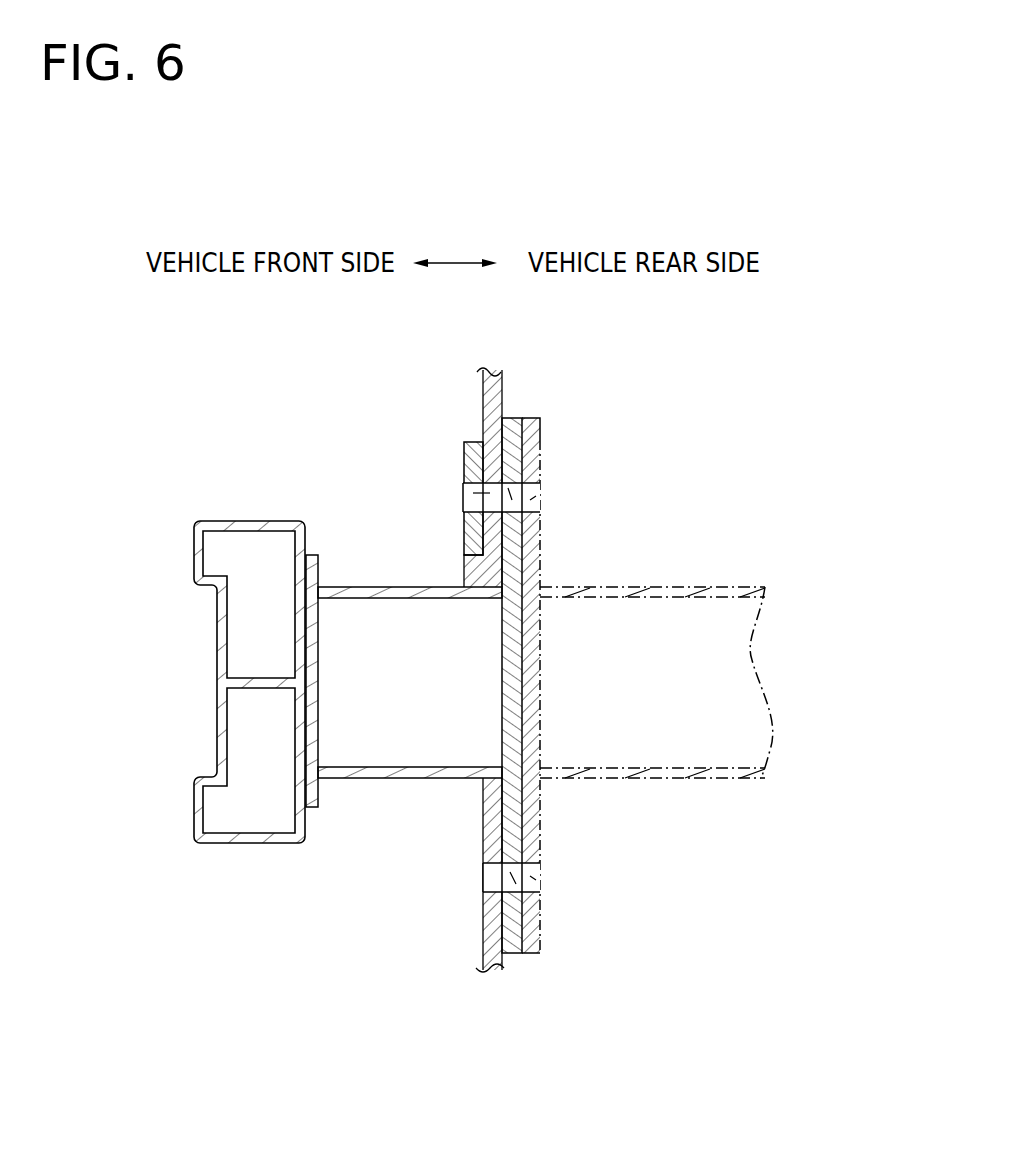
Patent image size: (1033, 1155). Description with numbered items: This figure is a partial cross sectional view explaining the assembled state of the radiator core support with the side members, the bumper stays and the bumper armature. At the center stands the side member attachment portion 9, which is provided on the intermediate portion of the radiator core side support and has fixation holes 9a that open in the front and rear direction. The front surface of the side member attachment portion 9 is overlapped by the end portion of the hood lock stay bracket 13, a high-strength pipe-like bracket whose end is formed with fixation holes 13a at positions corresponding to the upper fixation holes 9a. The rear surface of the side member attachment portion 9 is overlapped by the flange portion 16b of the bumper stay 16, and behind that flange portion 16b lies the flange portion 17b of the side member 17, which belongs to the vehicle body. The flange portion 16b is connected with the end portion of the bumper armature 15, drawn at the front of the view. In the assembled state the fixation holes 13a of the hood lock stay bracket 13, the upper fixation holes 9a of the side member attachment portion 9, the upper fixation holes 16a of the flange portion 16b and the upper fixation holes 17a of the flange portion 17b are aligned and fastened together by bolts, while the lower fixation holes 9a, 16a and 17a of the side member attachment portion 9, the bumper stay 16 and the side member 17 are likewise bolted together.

The side member attachment portion 9 is at (473, 396).
The fixation holes 9a is at (476, 503).
The hood lock stay bracket 13 is at (467, 430).
The fixation holes 13a is at (473, 493).
The bumper armature 15 is at (250, 512).
The bumper stay 16 is at (411, 787).
The fixation holes 16a is at (512, 498).
The flange portion 16b is at (510, 420).
The side member 17 is at (666, 578).
The fixation holes 17a is at (535, 500).
The flange portion 17b is at (540, 443).